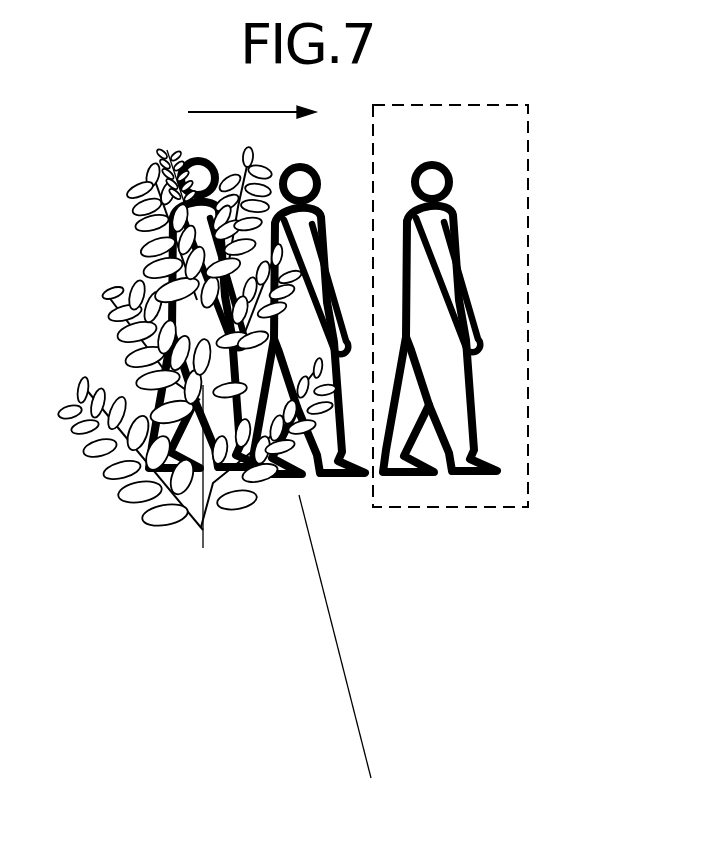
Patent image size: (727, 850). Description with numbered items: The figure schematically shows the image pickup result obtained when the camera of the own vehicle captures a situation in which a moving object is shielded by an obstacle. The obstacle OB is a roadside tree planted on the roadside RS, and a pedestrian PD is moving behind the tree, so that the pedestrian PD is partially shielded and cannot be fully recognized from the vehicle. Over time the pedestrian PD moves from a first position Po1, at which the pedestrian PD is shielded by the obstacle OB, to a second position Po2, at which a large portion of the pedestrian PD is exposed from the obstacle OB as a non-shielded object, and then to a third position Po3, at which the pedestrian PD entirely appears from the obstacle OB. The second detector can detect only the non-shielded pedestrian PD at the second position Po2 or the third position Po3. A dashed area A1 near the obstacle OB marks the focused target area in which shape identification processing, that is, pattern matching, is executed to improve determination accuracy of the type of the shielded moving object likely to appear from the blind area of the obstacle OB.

The pedestrian PD is at (213, 168).
The first position Po1 is at (206, 295).
The second position Po2 is at (308, 298).
The third position Po3 is at (440, 298).
The obstacle OB is at (105, 290).
The area near the obstacle A1 is at (529, 163).
The roadside RS is at (281, 651).